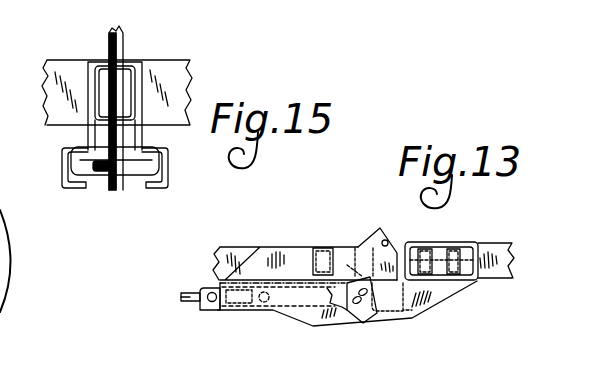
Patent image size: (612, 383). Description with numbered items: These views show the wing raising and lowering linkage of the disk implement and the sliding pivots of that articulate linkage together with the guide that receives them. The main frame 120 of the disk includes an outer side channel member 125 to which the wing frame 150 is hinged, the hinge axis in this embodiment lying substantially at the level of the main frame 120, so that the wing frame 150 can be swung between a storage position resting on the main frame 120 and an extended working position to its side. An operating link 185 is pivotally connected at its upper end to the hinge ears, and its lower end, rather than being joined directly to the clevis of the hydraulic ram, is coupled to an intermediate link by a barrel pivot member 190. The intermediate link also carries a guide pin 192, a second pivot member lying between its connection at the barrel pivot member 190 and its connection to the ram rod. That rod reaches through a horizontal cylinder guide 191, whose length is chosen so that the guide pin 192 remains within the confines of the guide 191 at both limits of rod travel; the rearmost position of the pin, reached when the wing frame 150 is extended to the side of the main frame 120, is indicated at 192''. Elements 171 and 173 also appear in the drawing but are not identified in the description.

In FIG. 15, the operating link 185 is at (124, 42).
In FIG. 15, the outer side channel member 125 is at (196, 78).
In FIG. 15, the barrel pivot member 190 is at (152, 156).
In FIG. 15, the horizontal guide 191 is at (80, 158).
In FIG. 15, the guide pin 192 is at (108, 180).
In FIG. 13, the main frame 120 is at (225, 243).
In FIG. 13, the wing frame 150 is at (462, 236).
In FIG. 13, the rearmost position of guide pin 192'' is at (208, 312).
In FIG. 13, the element 173 is at (0, 327).
In FIG. 13, the element 171 is at (0, 351).